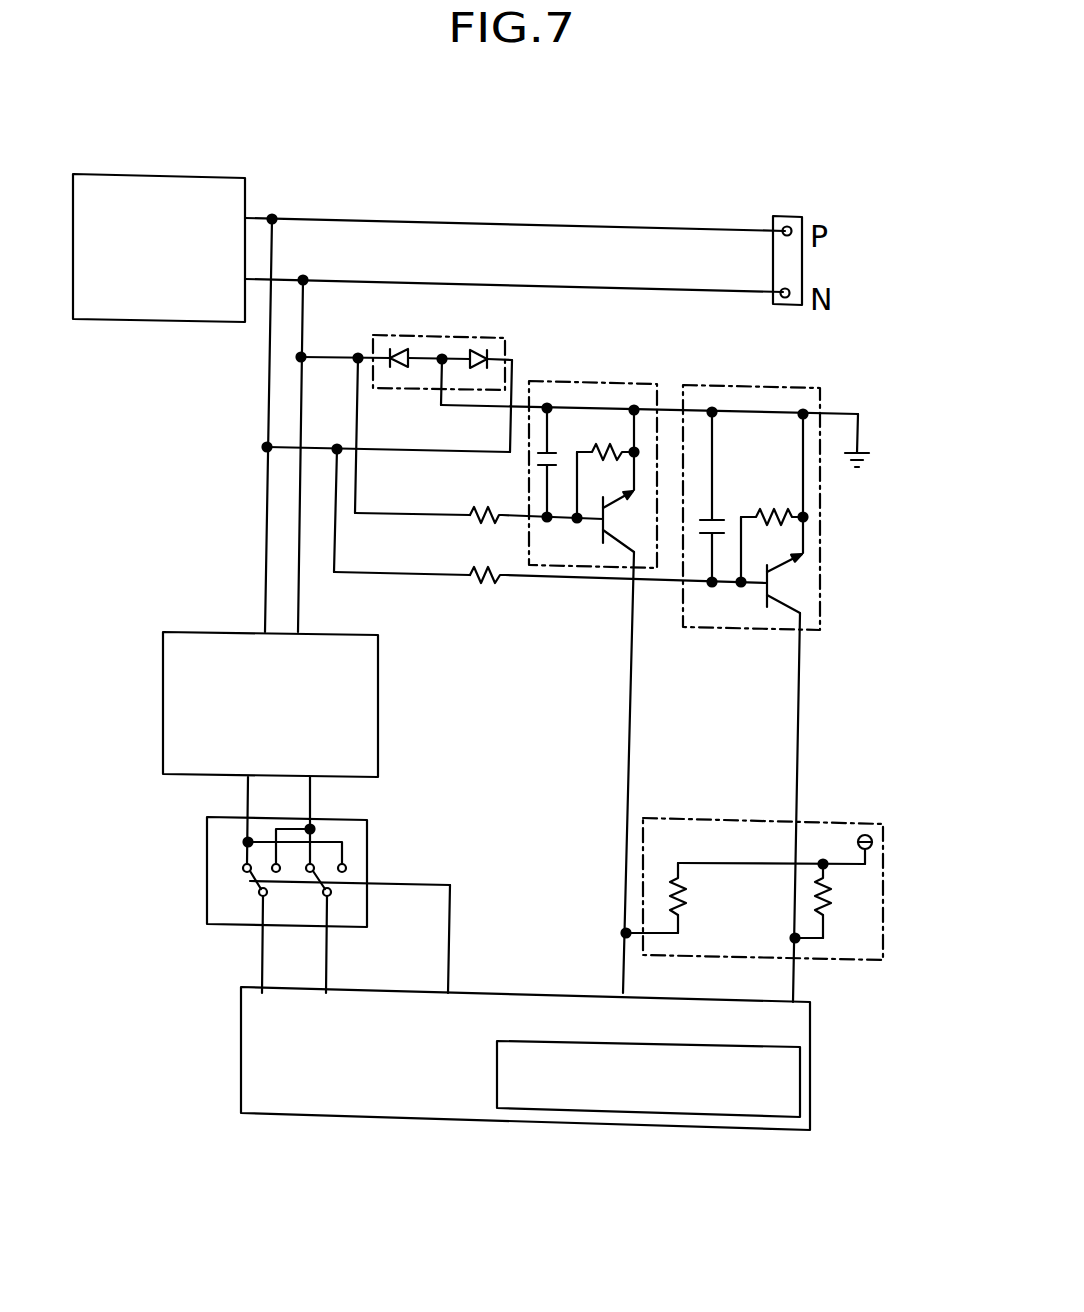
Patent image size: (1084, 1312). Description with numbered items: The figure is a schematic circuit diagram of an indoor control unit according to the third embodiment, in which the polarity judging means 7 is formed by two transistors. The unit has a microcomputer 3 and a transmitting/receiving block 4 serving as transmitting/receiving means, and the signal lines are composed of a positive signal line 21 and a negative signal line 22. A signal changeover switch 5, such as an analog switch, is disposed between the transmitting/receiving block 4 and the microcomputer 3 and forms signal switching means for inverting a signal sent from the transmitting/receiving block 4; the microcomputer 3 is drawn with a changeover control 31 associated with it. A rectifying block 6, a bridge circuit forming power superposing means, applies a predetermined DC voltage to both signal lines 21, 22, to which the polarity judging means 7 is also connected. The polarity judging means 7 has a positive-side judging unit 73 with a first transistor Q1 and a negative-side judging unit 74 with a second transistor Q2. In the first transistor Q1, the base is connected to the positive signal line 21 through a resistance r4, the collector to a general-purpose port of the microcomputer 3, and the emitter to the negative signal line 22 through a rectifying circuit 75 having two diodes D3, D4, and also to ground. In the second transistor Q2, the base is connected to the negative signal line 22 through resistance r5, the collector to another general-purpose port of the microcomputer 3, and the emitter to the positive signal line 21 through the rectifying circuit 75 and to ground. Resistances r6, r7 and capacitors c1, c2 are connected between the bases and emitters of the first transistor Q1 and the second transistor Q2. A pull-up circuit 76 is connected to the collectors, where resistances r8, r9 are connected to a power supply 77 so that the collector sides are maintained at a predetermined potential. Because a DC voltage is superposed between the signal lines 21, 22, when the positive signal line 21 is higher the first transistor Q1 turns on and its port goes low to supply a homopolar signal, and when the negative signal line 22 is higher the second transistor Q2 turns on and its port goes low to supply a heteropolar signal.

The rectifying block 6 is at (190, 174).
The positive signal line 21 is at (541, 225).
The negative signal line 22 is at (586, 288).
The rectifying circuit 75 is at (443, 367).
The negative-side judging unit 74 is at (568, 447).
The positive-side judging unit 73 is at (775, 489).
The pull-up circuit 76 is at (753, 847).
The power supply 77 is at (865, 835).
The polarity judging means 7 is at (564, 622).
The transmitting/receiving block 4 is at (378, 707).
The signal changeover switch 5 is at (367, 839).
The microcomputer 3 is at (525, 1003).
The changeover control 31 is at (546, 1041).
The diode D3 is at (394, 352).
The diode D4 is at (481, 352).
The capacitor c2 is at (537, 470).
The resistance r7 is at (606, 446).
The second transistor Q2 is at (602, 545).
The resistance r5 is at (471, 520).
The resistance r4 is at (478, 583).
The capacitor c1 is at (720, 521).
The resistance r6 is at (769, 512).
The first transistor Q1 is at (792, 592).
The resistance r9 is at (690, 900).
The resistance r8 is at (830, 892).